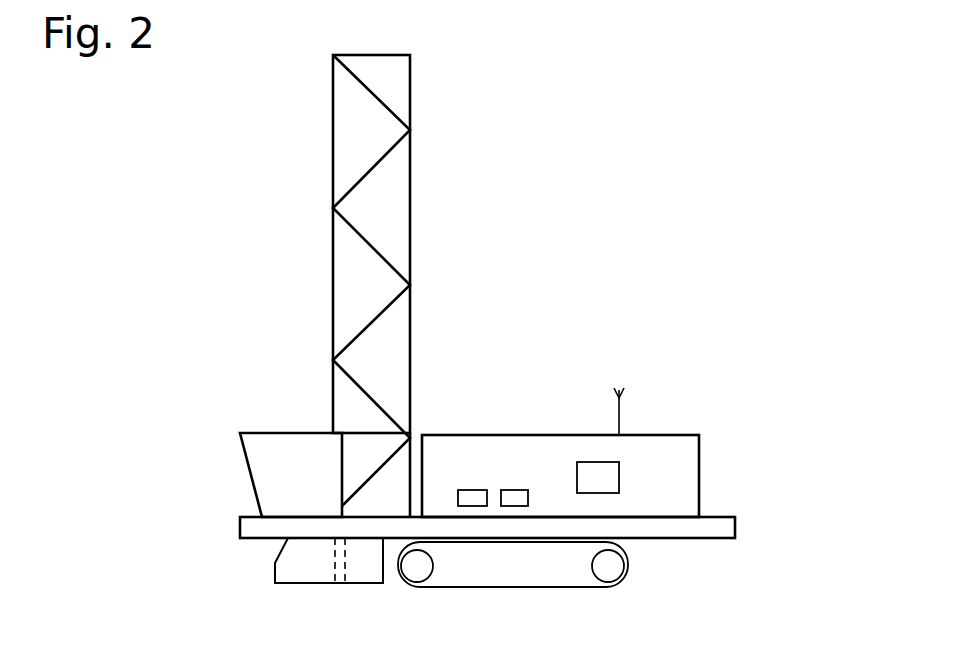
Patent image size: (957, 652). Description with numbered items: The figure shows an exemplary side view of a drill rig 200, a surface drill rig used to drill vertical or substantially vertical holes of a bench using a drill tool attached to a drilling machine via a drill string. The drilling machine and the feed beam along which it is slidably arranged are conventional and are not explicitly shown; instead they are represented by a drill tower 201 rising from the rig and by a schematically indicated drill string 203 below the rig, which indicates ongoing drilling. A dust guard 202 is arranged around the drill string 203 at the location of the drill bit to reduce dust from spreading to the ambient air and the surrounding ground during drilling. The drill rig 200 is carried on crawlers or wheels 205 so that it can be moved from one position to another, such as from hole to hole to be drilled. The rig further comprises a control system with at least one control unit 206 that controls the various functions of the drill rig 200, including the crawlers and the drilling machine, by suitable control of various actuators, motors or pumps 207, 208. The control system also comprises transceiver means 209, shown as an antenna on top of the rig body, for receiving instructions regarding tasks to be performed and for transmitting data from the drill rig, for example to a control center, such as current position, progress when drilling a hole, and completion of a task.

The drill rig 200 is at (673, 180).
The drill tower 201 is at (411, 240).
The dust guard 202 is at (278, 575).
The drill string 203 is at (333, 577).
The crawlers or wheels 205 is at (518, 570).
The control unit 206 is at (597, 487).
The actuator/motor/pump 207 is at (478, 490).
The actuator/motor/pump 208 is at (515, 490).
The transceiver means 209 is at (623, 396).